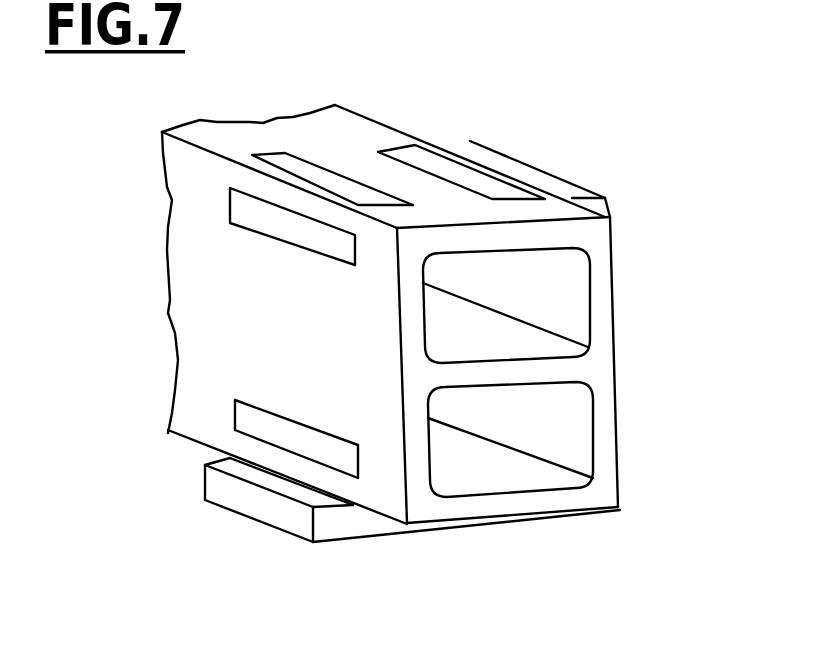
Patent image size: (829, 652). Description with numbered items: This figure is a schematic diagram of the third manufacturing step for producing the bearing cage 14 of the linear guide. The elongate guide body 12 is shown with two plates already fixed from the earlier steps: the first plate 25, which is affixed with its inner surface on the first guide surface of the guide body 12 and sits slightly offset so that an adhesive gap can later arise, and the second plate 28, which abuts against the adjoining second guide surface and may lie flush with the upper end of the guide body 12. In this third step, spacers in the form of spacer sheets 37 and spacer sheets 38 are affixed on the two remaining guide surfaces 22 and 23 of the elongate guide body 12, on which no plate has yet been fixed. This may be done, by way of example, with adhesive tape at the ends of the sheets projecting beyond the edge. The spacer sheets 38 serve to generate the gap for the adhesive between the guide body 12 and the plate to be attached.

The elongate guide body 12 is at (558, 431).
The bearing cage 14 is at (716, 504).
The guide surface 22 is at (195, 250).
The guide surface 23 is at (318, 133).
The first plate 25 is at (347, 525).
The second plate 28 is at (538, 180).
The spacer sheets 37 is at (313, 235).
The spacer sheets 38 is at (357, 192).